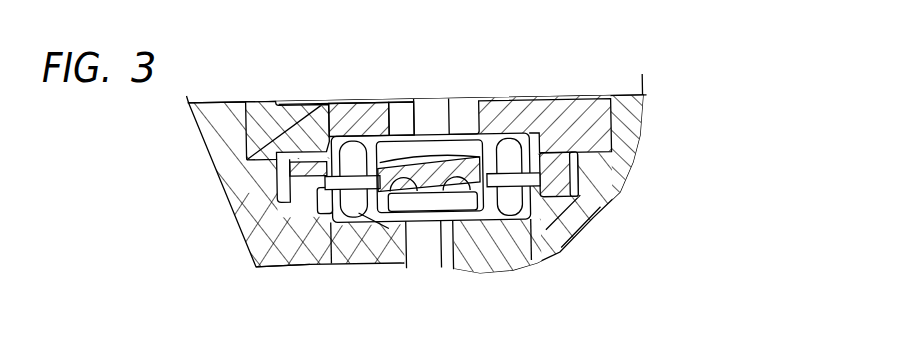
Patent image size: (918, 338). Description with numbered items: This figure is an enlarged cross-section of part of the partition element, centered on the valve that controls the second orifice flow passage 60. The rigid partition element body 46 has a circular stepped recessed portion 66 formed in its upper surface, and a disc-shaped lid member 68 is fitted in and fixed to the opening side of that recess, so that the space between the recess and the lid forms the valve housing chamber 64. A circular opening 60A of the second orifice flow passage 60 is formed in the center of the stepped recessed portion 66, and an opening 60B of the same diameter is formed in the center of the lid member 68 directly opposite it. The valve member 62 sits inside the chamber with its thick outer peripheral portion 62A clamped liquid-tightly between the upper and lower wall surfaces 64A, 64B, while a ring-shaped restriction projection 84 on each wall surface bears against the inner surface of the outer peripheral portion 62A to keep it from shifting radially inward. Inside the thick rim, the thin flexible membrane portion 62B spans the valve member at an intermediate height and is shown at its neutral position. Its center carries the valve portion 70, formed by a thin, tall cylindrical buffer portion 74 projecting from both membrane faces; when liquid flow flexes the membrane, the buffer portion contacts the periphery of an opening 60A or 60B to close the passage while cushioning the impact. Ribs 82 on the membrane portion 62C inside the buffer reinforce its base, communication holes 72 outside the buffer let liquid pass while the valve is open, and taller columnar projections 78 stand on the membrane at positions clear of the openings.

The partition element body 46 is at (197, 125).
The second orifice flow passage 60 is at (425, 248).
The opening 60A is at (440, 235).
The opening 60B is at (424, 125).
The valve member 62 is at (545, 104).
The outer peripheral portion 62A is at (563, 190).
The flexible membrane portion 62B is at (297, 265).
The membrane portion 62C is at (390, 120).
The valve housing chamber 64 is at (552, 231).
The upper wall surface 64A is at (490, 140).
The lower wall surface 64B is at (532, 230).
The stepped recessed portion 66 is at (300, 265).
The lid member 68 is at (275, 122).
The valve portion 70 is at (399, 208).
The communication holes 72 is at (318, 126).
The cylindrical buffer portion 74 is at (418, 168).
The columnar projections 78 is at (388, 228).
The ribs 82 is at (508, 148).
The restriction projection 84 is at (293, 187).